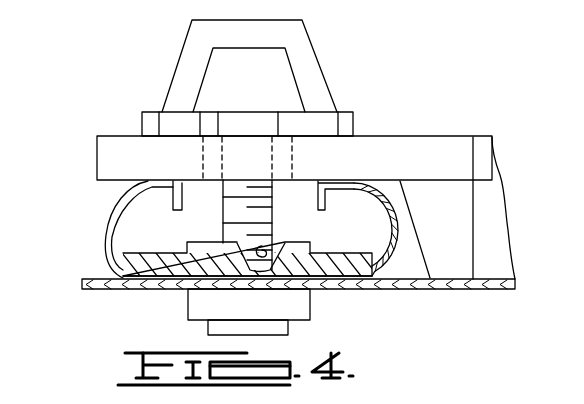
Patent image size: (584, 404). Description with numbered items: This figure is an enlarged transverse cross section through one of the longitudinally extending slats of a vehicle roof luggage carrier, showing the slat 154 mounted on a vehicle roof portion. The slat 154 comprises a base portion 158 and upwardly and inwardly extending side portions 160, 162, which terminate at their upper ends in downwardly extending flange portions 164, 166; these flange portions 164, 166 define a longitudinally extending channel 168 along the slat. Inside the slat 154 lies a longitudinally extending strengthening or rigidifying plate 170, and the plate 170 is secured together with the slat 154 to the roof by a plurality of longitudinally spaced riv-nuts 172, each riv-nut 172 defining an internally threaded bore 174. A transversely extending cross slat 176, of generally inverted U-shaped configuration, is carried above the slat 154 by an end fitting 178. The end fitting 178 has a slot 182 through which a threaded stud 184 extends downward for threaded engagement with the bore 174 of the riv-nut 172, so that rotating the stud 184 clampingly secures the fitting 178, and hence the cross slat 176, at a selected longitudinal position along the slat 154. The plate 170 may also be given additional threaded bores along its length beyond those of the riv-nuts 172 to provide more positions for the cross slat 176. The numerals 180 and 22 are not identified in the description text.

The slat 154 is at (388, 202).
The base portion 158 is at (357, 280).
The side portion 160 is at (392, 232).
The side portion 162 is at (125, 193).
The flange portion 164 is at (338, 202).
The flange portion 166 is at (171, 200).
The channel 168 is at (305, 198).
The strengthening plate 170 is at (335, 258).
The riv-nut 172 is at (197, 305).
The threaded bore 174 is at (262, 246).
The cross slat 176 is at (505, 195).
The end fitting 178 is at (442, 141).
The mounting band 180 is at (97, 142).
The slot 182 is at (207, 158).
The threaded stud 184 is at (318, 60).
The container 22 is at (572, 221).